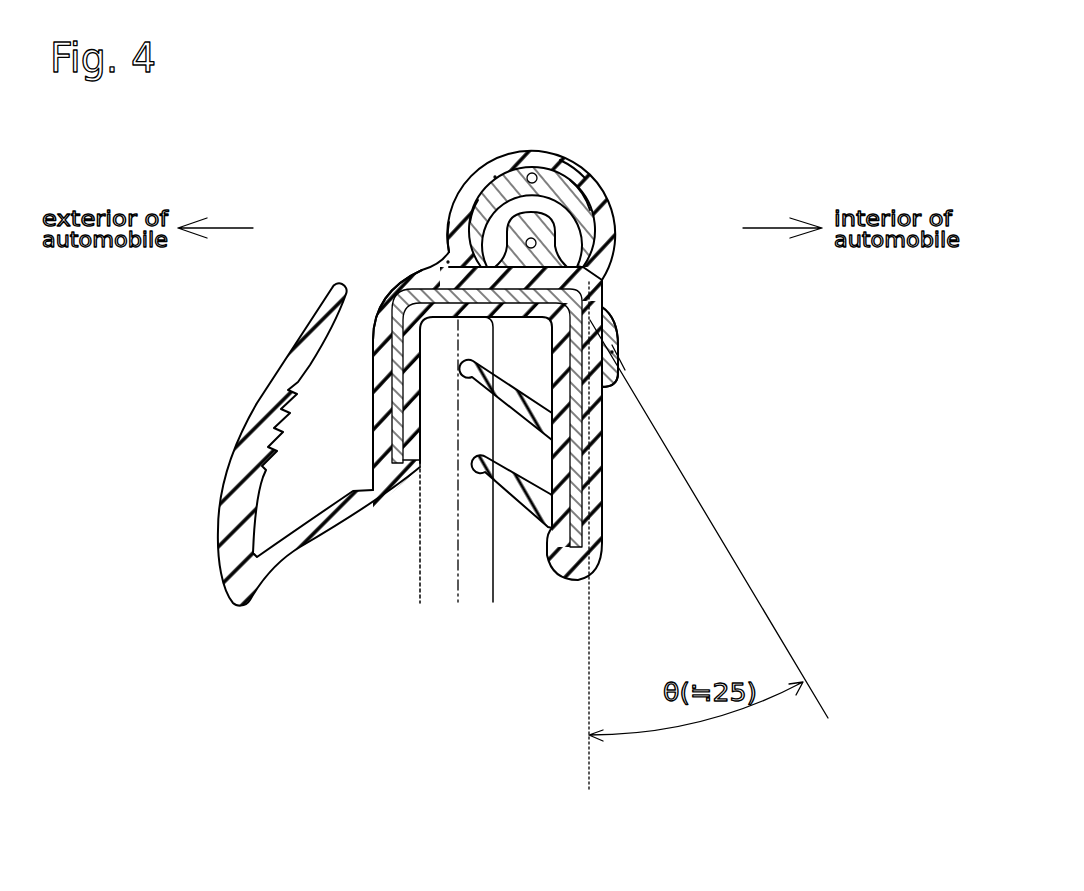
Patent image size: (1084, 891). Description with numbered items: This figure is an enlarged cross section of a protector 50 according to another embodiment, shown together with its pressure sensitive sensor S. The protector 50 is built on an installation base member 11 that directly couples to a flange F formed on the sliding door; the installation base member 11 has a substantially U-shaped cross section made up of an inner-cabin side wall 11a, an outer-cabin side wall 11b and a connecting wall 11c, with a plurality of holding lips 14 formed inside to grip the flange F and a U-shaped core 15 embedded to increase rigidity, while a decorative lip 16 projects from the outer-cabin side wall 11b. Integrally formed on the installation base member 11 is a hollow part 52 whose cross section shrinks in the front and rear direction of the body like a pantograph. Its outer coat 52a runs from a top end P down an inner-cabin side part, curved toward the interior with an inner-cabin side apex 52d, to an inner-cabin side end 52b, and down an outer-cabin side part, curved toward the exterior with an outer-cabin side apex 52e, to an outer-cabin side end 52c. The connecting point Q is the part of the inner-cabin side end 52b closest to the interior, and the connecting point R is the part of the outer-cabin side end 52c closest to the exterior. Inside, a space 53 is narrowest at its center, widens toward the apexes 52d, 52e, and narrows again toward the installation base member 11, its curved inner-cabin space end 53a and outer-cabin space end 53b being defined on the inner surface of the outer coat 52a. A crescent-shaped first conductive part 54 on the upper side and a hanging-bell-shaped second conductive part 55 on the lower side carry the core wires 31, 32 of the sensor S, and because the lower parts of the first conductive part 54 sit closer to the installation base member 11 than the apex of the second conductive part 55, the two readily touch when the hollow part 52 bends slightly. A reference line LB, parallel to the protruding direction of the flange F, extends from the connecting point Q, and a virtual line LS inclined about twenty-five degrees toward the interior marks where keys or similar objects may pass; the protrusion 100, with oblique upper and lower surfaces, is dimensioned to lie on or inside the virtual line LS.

The installation base member 11 is at (457, 439).
The inner-cabin side wall 11a is at (603, 452).
The outer-cabin side wall 11b is at (373, 382).
The connecting wall 11c is at (513, 309).
The holding lips 14 is at (478, 398).
The core 15 is at (398, 347).
The decorative lip 16 is at (230, 433).
The core wire (electrode wire) 31 is at (557, 217).
The core wire (electrode wire) 32 is at (584, 277).
The protector 50 is at (651, 217).
The hollow part 52 is at (522, 150).
The outer coat 52a is at (567, 167).
The inner-cabin side end 52b is at (603, 330).
The outer-cabin side end 52c is at (446, 265).
The inner-cabin side apex 52d is at (584, 266).
The outer-cabin side apex 52e is at (450, 255).
The space 53 is at (583, 182).
The inner-cabin space end 53a is at (592, 305).
The outer-cabin space end 53b is at (445, 268).
The first conductive part 54 is at (483, 196).
The second conductive part 55 is at (548, 225).
The protrusion 100 is at (620, 363).
The flange F is at (420, 567).
The top end P is at (531, 172).
The connecting point Q is at (614, 352).
The connecting point R is at (448, 262).
The sensor (pressure sensitive sensor) S is at (495, 177).
The reference line LB is at (591, 765).
The virtual line LS is at (813, 703).